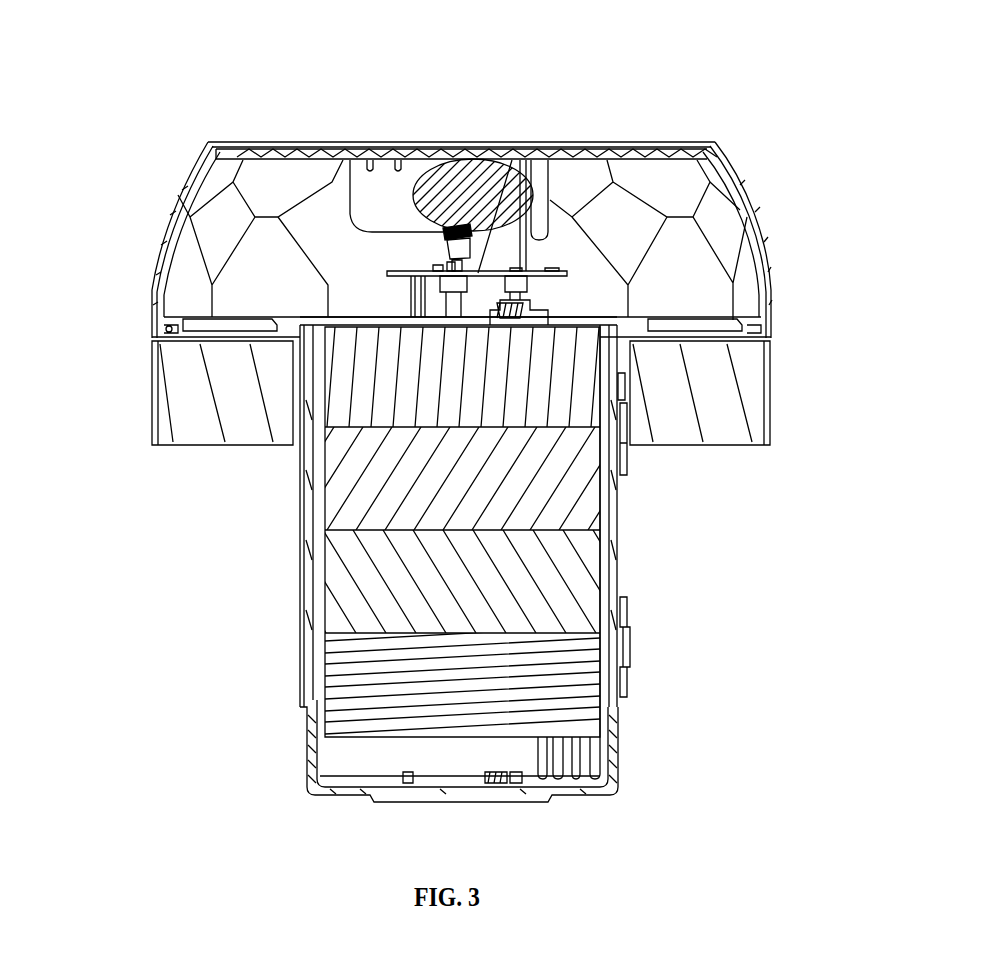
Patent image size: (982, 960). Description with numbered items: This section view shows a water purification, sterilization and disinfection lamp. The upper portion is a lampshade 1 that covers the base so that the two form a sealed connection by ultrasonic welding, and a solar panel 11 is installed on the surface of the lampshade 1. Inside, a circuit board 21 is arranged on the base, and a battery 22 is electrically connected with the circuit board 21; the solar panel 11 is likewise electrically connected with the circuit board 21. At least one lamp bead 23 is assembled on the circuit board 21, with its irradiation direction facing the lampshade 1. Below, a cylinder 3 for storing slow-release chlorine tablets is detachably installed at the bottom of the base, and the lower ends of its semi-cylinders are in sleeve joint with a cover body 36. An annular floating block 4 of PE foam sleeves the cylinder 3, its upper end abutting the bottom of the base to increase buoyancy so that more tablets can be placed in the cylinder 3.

The lampshade 1 is at (182, 197).
The solar panel 11 is at (342, 137).
The battery 22 is at (493, 182).
The circuit board 21 is at (523, 268).
The lamp bead 23 is at (565, 262).
The floating block 4 is at (155, 406).
The cylinder 3 is at (300, 568).
The cover body 36 is at (622, 767).